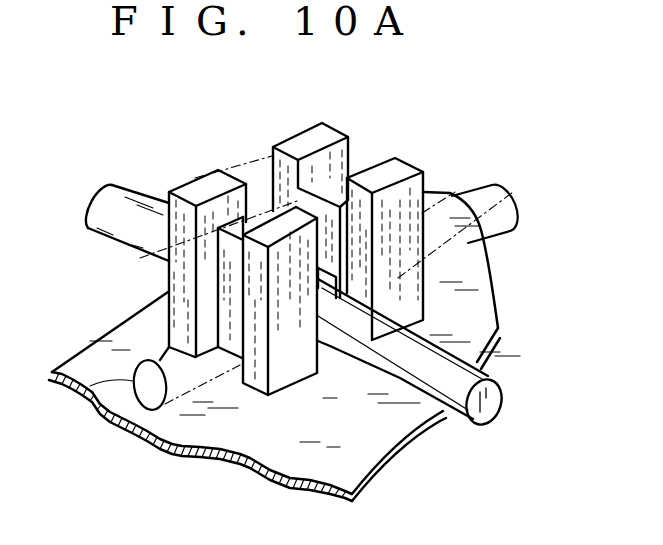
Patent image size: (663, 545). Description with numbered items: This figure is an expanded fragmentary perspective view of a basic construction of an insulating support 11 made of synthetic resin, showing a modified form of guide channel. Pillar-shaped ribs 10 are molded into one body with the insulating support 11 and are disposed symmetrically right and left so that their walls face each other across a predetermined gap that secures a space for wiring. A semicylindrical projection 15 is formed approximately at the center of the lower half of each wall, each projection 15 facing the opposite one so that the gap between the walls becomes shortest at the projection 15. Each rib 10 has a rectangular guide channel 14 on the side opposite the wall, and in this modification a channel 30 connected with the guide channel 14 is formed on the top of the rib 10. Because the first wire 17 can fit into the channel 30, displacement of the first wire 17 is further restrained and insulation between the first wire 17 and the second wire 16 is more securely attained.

The rib 10 is at (162, 183).
The insulating support 11 is at (215, 432).
The guide channel 14 is at (262, 326).
The projection 15 is at (350, 298).
The second wire 16 is at (502, 404).
The first wire 17 is at (132, 383).
The channel 30 is at (237, 226).